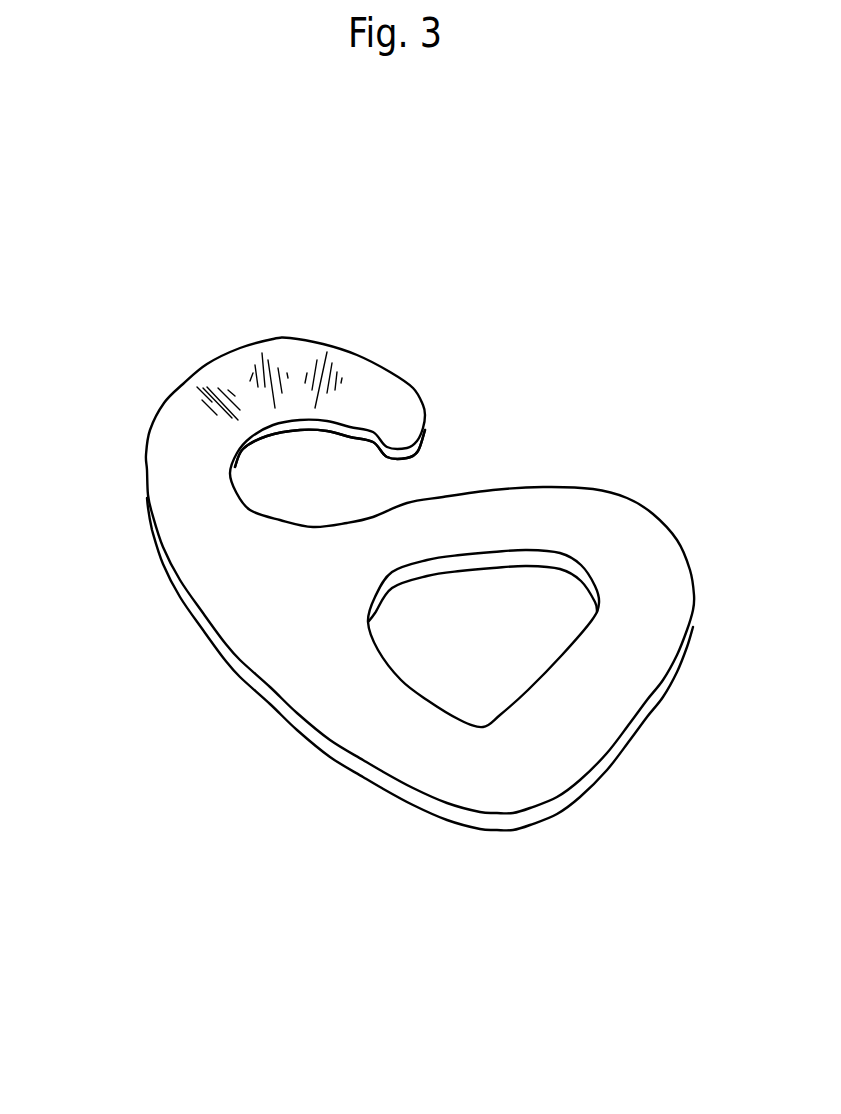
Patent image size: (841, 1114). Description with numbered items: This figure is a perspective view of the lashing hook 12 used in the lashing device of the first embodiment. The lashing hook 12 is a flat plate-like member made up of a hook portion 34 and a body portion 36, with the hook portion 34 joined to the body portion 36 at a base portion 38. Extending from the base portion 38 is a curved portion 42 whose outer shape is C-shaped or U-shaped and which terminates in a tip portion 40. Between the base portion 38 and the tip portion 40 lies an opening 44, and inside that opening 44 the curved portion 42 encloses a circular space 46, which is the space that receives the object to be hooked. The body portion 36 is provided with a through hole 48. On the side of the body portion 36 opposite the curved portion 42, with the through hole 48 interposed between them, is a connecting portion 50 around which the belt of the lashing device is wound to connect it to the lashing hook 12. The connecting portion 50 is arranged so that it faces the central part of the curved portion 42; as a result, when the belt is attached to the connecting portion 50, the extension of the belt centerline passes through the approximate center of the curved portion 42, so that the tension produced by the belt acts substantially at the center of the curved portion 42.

The lashing hook 12 is at (371, 607).
The hook portion 34 is at (31, 558).
The body portion 36 is at (474, 897).
The base portion 38 is at (318, 583).
The tip portion 40 is at (393, 422).
The curved portion 42 is at (187, 407).
The opening 44 is at (397, 483).
The circular space 46 is at (319, 491).
The through hole 48 is at (496, 653).
The connecting portion 50 is at (707, 653).